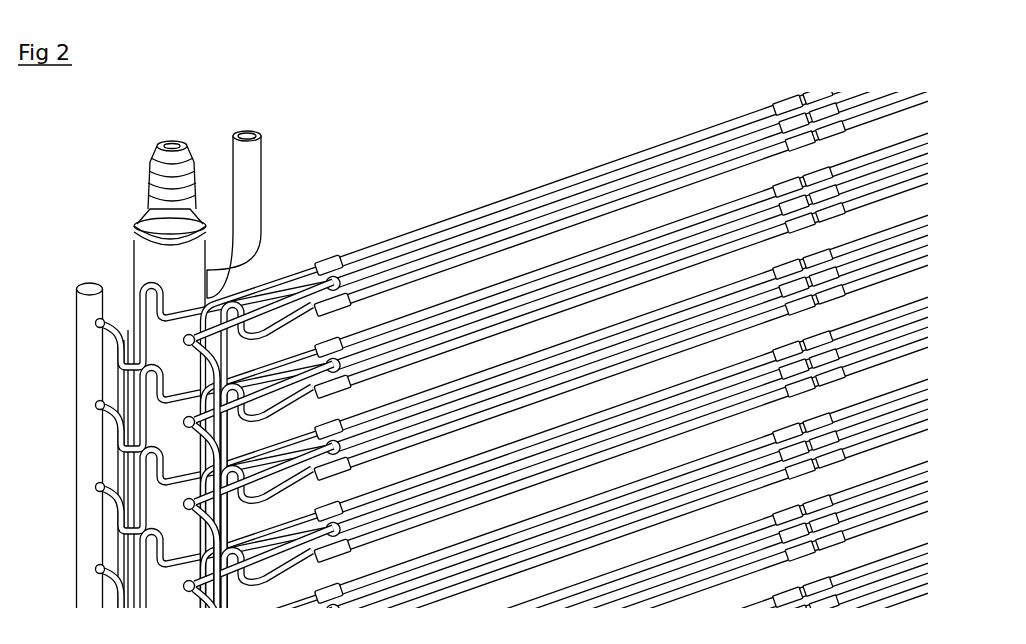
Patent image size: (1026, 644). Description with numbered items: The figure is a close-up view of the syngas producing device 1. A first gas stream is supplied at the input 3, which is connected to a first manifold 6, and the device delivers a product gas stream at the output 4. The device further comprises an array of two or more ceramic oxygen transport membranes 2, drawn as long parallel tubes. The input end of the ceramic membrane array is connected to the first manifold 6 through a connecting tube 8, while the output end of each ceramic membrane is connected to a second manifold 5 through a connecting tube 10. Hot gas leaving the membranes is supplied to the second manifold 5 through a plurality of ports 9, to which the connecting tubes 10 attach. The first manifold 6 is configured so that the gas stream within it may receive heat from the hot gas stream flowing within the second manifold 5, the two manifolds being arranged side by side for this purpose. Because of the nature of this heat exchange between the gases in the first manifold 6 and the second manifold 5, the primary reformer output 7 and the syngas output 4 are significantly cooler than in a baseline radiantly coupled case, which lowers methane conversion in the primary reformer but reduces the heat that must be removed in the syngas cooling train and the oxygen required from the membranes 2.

The syngas producing device 1 is at (512, 72).
The ceramic oxygen transport membranes 2 is at (660, 150).
The input 3 is at (180, 142).
The output 4 is at (248, 133).
The second manifold 5 is at (143, 261).
The first manifold 6 is at (88, 352).
The primary reformer output 7 is at (97, 301).
The connecting tube 8 is at (117, 447).
The ports 9 is at (194, 338).
The connecting tube 10 is at (236, 320).